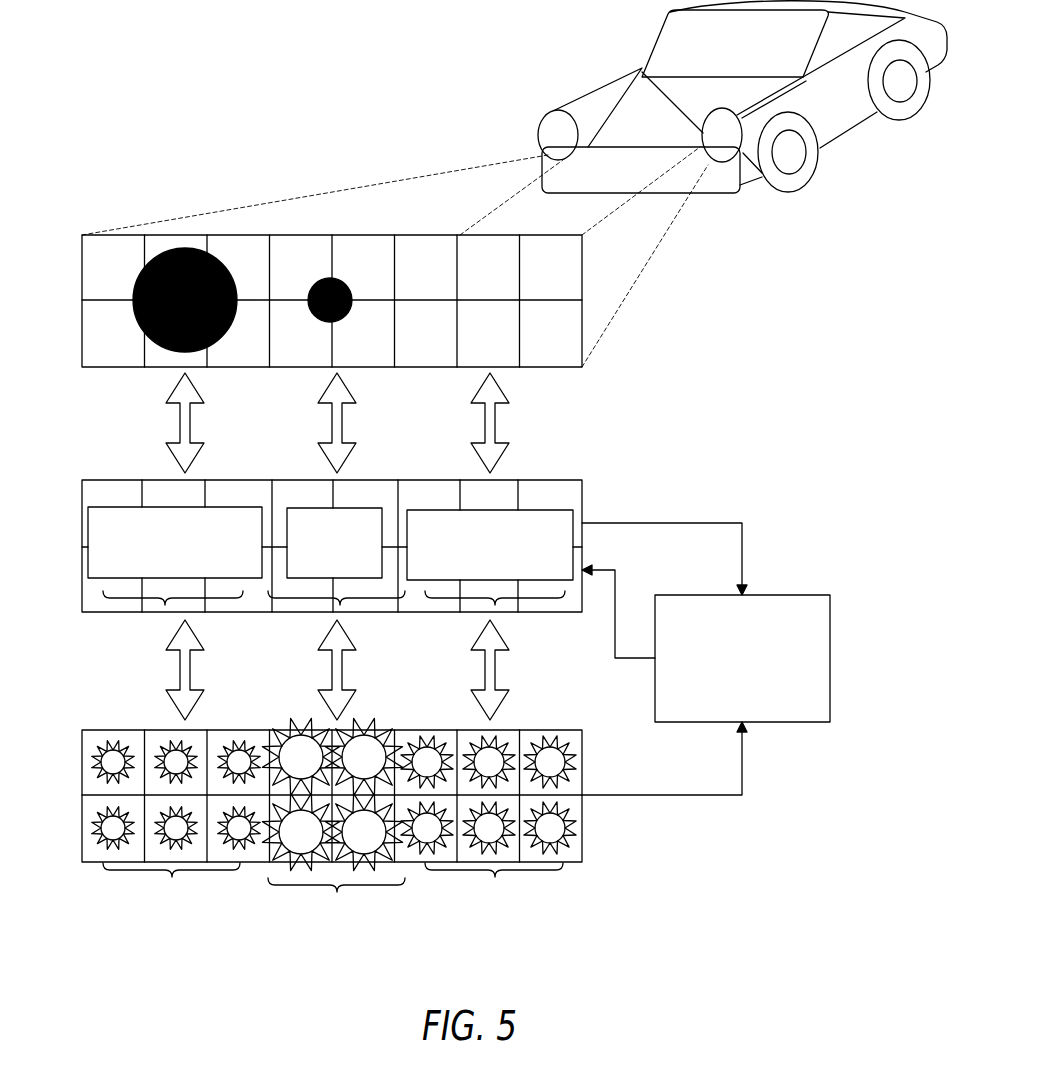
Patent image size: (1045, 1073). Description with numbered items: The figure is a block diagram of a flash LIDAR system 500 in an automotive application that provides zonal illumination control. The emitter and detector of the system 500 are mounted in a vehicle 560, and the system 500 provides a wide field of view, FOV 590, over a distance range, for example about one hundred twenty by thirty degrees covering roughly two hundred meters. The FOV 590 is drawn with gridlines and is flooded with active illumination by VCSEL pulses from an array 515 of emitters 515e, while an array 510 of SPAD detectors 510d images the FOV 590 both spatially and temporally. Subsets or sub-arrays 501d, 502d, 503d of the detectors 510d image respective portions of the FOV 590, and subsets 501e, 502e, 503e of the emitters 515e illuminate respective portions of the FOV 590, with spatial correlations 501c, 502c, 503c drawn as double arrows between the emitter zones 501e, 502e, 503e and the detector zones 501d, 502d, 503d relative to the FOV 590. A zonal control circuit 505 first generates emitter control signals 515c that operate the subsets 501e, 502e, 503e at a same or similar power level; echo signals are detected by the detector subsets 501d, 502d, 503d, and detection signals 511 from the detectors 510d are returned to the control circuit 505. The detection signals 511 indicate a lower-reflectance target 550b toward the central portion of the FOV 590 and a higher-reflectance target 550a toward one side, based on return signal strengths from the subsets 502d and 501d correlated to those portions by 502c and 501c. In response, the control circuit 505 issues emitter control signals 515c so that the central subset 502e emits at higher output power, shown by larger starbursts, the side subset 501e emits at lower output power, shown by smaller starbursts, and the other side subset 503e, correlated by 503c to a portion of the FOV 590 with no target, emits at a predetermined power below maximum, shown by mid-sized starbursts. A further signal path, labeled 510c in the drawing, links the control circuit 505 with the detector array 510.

The system 500 is at (745, 445).
The spatial correlation 501c is at (167, 442).
The spatial correlation 502c is at (325, 455).
The spatial correlation 503c is at (503, 440).
The subset of detectors 501d is at (173, 617).
The subset of detectors 502d is at (339, 617).
The subset of detectors 503d is at (495, 617).
The subset of emitters 501e is at (171, 893).
The subset of emitters 502e is at (336, 901).
The subset of emitters 503e is at (494, 892).
The control circuit 505 is at (729, 680).
The detector array 510 is at (123, 480).
The control signal line to driver array 510c is at (615, 587).
The detector 510d is at (552, 540).
The detection signals 511 is at (718, 523).
The emitter array 515 is at (115, 730).
The emitter control signals 515c is at (698, 795).
The emitter 515e is at (550, 827).
The higher-reflectance target 550a is at (185, 290).
The lower-reflectance target 550b is at (330, 290).
The vehicle 560 is at (607, 80).
The field of view 590 is at (582, 300).